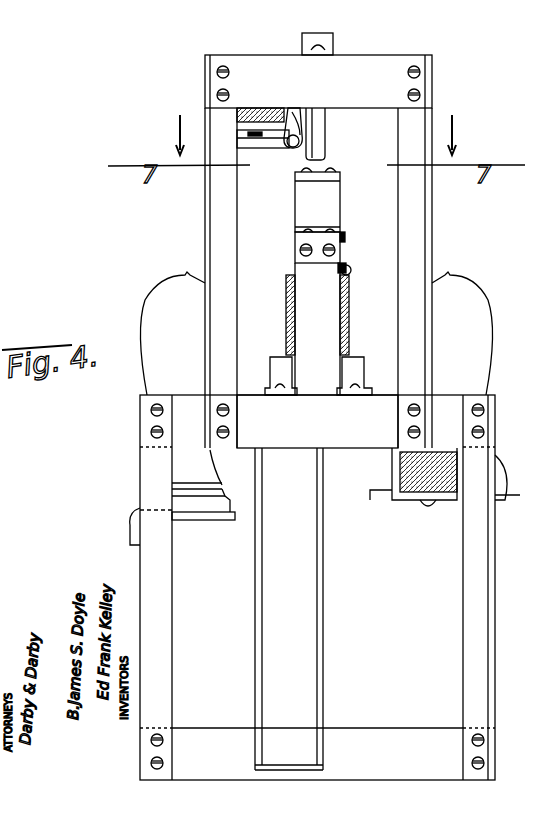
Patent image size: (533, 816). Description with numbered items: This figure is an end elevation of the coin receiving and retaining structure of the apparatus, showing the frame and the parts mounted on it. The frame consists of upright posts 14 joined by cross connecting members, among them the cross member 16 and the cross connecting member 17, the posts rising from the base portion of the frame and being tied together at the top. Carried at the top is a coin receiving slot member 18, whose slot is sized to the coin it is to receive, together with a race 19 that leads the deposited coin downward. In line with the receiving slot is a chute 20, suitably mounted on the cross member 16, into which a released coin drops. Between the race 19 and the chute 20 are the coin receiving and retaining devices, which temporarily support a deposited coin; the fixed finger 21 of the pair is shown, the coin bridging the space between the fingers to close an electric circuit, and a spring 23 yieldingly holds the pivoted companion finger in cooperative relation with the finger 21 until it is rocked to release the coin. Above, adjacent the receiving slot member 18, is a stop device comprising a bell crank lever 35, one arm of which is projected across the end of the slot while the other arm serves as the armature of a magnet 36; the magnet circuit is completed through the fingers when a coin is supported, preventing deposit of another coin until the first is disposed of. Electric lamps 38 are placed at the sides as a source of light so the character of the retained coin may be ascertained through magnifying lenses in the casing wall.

The upright posts 14 is at (397, 230).
The cross member 16 is at (317, 421).
The cross connecting member 17 is at (325, 587).
The coin receiving slot member 18 is at (302, 42).
The race 19 is at (326, 128).
The chute 20 is at (322, 310).
The fixed finger 21 is at (341, 177).
The spring 23 is at (346, 252).
The bell crank lever 35 is at (289, 115).
The magnet 36 is at (237, 113).
The electric lamp 38 is at (316, 333).